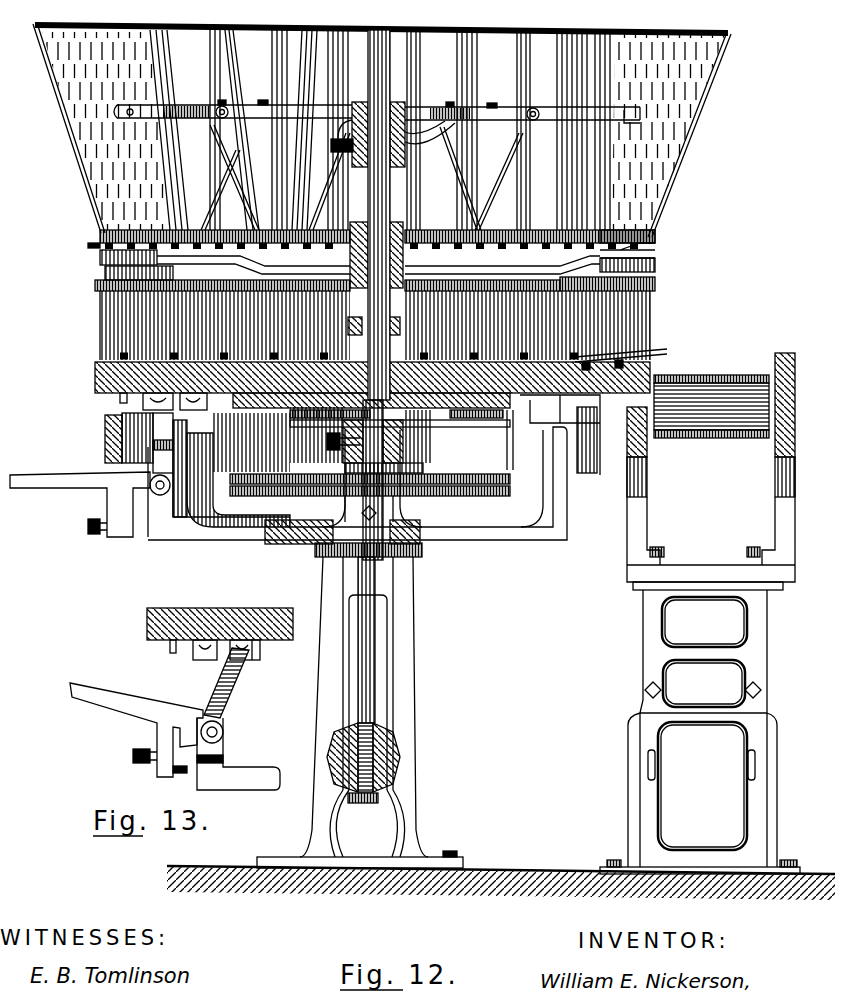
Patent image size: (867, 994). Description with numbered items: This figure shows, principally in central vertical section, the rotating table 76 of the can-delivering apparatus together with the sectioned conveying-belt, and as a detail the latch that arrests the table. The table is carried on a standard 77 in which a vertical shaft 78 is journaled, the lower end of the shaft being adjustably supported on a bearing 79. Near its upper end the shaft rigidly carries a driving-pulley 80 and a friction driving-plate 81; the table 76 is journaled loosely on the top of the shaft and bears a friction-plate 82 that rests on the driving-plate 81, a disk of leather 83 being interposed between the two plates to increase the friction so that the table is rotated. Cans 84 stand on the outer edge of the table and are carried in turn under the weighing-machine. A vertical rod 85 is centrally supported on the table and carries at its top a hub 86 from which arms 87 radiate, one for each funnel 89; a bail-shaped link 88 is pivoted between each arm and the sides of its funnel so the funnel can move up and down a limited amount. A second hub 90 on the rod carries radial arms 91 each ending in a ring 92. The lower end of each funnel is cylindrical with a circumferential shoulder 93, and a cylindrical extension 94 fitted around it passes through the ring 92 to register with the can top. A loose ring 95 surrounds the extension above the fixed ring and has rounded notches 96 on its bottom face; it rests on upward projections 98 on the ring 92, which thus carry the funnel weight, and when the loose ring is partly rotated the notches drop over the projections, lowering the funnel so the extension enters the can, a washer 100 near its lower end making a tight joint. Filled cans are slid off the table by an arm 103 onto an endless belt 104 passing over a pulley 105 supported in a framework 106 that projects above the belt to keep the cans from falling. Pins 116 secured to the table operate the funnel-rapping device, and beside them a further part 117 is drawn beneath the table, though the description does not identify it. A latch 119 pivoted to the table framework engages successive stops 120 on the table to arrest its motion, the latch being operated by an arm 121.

In FIG. 12, the rotating table 76 is at (95, 372).
In FIG. 13, the rotating table 76 is at (147, 629).
In FIG. 12, the standard 77 is at (413, 668).
In FIG. 12, the vertical shaft 78 is at (372, 620).
In FIG. 12, the bearing 79 is at (400, 771).
In FIG. 12, the driving-pulley 80 is at (357, 483).
In FIG. 12, the friction driving-plate 81 is at (452, 428).
In FIG. 12, the friction-plate 82 is at (520, 428).
In FIG. 12, the disk of leather 83 is at (480, 428).
In FIG. 12, the cans 84 is at (100, 325).
In FIG. 12, the vertical rod 85 is at (377, 101).
In FIG. 12, the hub 86 is at (406, 103).
In FIG. 12, the arms 87 is at (418, 143).
In FIG. 12, the bail-shaped link 88 is at (147, 118).
In FIG. 12, the funnel 89 is at (86, 126).
In FIG. 12, the second hub 90 is at (352, 236).
In FIG. 12, the radial arms 91 is at (92, 245).
In FIG. 12, the ring 92 is at (100, 258).
In FIG. 12, the circumferential shoulder 93 is at (100, 233).
In FIG. 12, the cylindrical extension 94 is at (105, 274).
In FIG. 12, the loose ring 95 is at (634, 252).
In FIG. 12, the rounded notches 96 is at (620, 233).
In FIG. 12, the upward projections 98 is at (128, 292).
In FIG. 12, the washer 100 is at (95, 285).
In FIG. 12, the arm 103 is at (667, 350).
In FIG. 12, the endless belt 104 is at (723, 376).
In FIG. 12, the pulley 105 is at (711, 406).
In FIG. 12, the framework 106 is at (640, 491).
In FIG. 12, the pins 116 is at (122, 389).
In FIG. 13, the pins 116 is at (167, 647).
In FIG. 12, the bracket 117 is at (147, 413).
In FIG. 13, the latch 119 is at (235, 688).
In FIG. 12, the stops 120 is at (593, 420).
In FIG. 13, the stops 120 is at (195, 652).
In FIG. 12, the arm 121 is at (62, 487).
In FIG. 13, the arm 121 is at (107, 707).